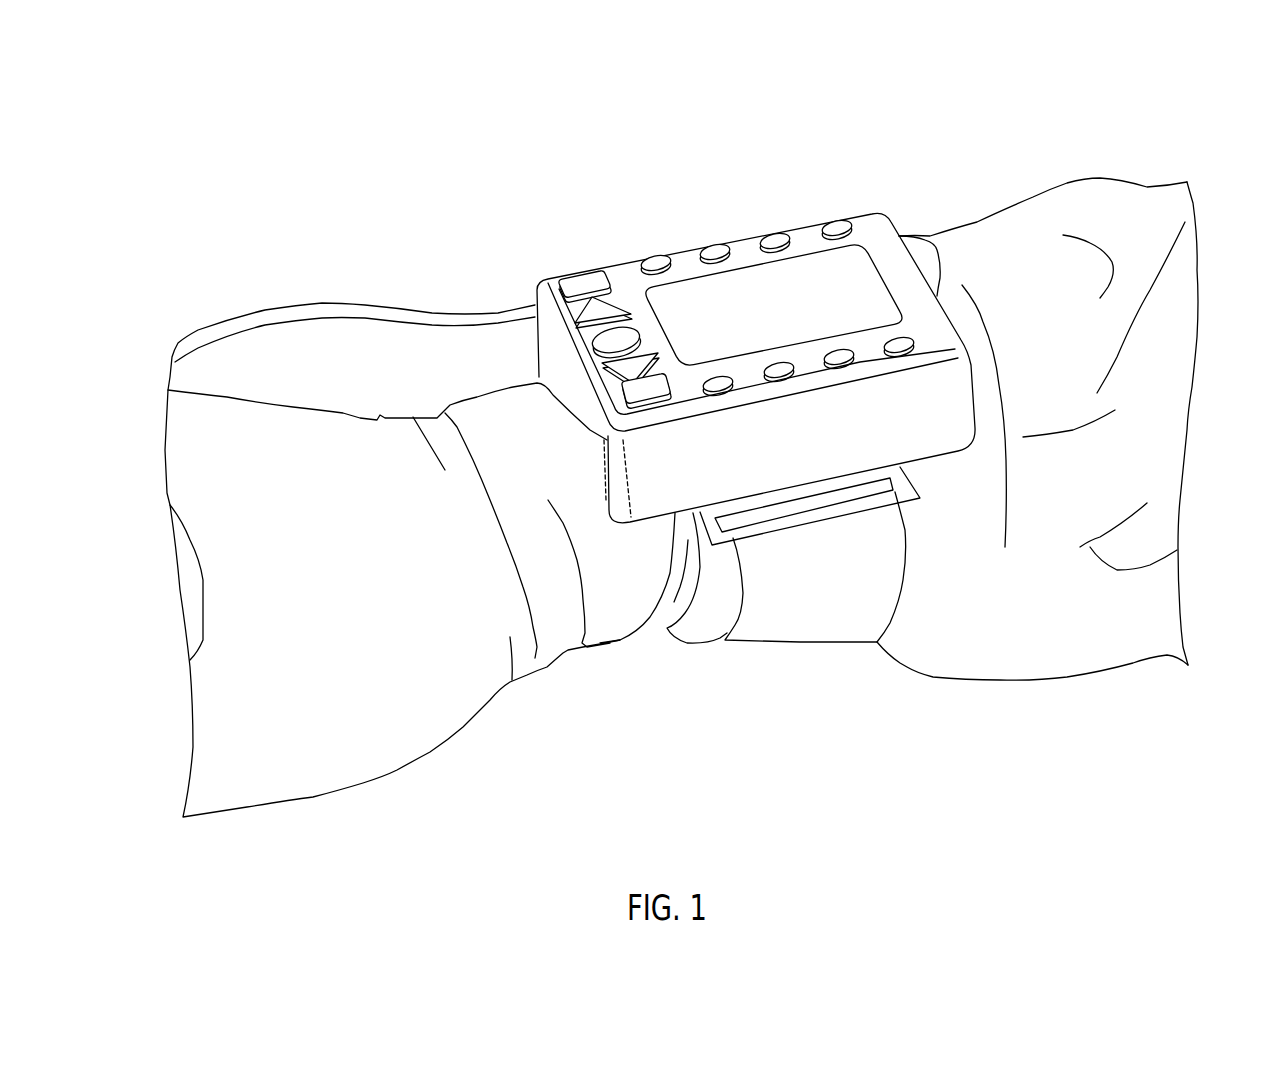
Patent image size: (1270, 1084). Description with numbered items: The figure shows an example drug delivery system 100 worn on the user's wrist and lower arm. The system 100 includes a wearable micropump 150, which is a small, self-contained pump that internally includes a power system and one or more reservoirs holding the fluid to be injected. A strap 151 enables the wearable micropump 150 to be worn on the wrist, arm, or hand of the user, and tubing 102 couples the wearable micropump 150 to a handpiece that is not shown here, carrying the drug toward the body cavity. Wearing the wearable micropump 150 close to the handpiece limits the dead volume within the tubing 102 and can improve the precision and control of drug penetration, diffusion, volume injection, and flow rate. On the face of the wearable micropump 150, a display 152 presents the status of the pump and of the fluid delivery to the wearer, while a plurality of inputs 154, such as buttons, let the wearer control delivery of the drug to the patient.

The drug delivery system 100 is at (1167, 162).
The tubing 102 is at (224, 330).
The wearable micropump 150 is at (955, 352).
The strap 151 is at (907, 577).
The display 152 is at (792, 320).
The inputs 154 is at (655, 260).